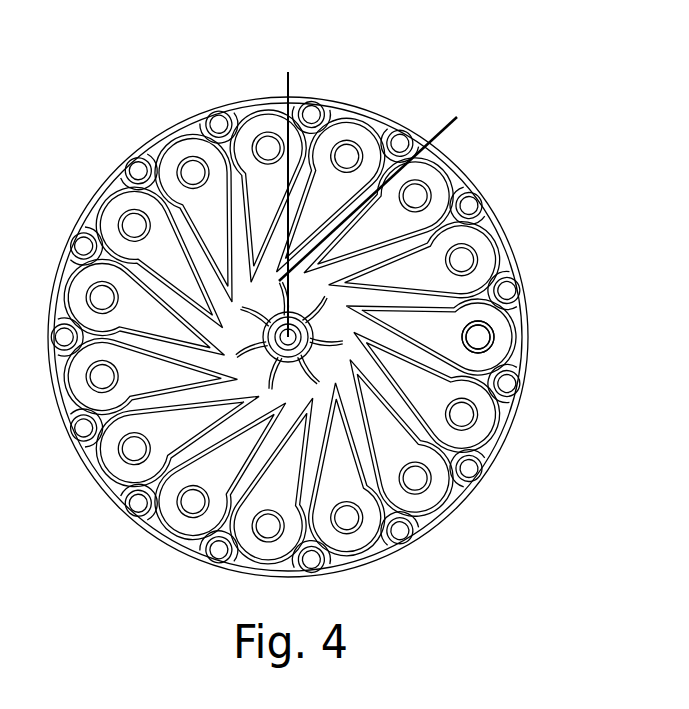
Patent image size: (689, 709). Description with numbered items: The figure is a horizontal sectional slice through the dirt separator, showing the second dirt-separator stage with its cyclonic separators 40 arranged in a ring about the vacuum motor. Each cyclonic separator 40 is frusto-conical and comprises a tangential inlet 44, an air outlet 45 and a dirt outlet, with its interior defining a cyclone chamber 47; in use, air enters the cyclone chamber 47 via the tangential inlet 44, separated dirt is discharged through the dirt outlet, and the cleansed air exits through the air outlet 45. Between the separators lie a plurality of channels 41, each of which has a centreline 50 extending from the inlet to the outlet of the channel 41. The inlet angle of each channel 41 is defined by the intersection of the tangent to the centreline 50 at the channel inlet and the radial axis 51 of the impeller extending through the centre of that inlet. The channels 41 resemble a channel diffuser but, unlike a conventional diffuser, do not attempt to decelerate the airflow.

The cyclonic separator 40 is at (490, 230).
The channel 41 is at (388, 250).
The tangential inlet 44 is at (462, 305).
The air outlet 45 is at (487, 330).
The cyclone chamber 47 is at (493, 348).
The centreline 50 is at (442, 130).
The radial axis 51 is at (287, 88).